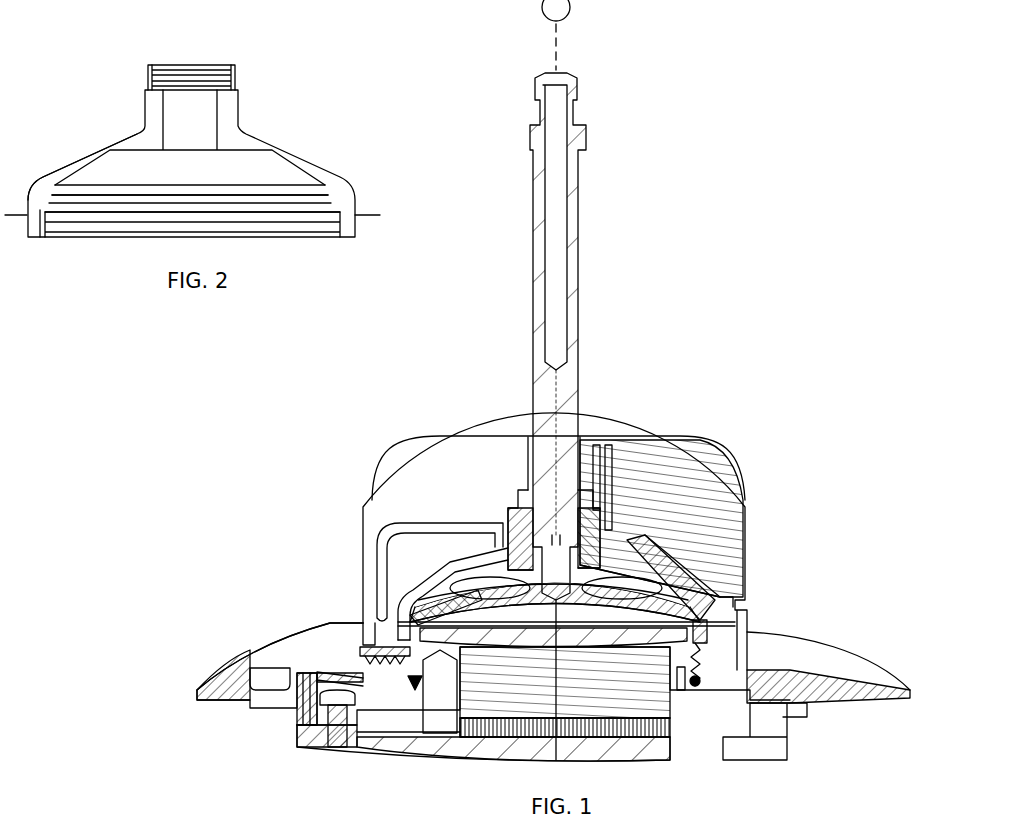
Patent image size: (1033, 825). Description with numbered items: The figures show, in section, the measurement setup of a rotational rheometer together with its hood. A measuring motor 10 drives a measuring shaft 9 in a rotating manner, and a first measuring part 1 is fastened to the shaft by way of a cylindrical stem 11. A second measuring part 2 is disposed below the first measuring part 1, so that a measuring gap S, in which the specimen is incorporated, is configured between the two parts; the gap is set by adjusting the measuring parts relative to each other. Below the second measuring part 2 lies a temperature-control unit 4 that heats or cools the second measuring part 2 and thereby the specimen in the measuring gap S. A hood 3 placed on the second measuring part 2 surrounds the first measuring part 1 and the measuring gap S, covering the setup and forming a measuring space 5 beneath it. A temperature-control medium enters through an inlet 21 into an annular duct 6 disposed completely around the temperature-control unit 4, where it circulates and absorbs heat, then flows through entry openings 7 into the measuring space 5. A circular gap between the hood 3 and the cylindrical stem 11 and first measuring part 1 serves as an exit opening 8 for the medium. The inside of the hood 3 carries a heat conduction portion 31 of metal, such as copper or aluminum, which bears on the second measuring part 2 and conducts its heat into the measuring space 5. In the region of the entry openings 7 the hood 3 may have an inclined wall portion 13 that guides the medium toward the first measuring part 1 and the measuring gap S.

In FIG. 1, the first measuring part 1 is at (623, 590).
In FIG. 1, the second measuring part 2 is at (665, 613).
In FIG. 2, the hood 3 is at (300, 127).
In FIG. 1, the hood 3 is at (360, 458).
In FIG. 1, the temperature-control unit 4 is at (603, 673).
In FIG. 1, the measuring space 5 is at (480, 580).
In FIG. 1, the annular duct 6 is at (323, 740).
In FIG. 1, the entry openings 7 is at (653, 633).
In FIG. 1, the exit opening 8 is at (524, 508).
In FIG. 1, the measuring shaft 9 is at (572, 333).
In FIG. 1, the measuring motor 10 is at (570, 10).
In FIG. 1, the cylindrical stem 11 is at (522, 455).
In FIG. 2, the wall portion 13 is at (330, 207).
In FIG. 1, the inlet 21 is at (363, 650).
In FIG. 2, the heat conduction portion 31 is at (33, 232).
In FIG. 1, the heat conduction portion 31 is at (412, 613).
In FIG. 1, the measuring gap S is at (462, 622).